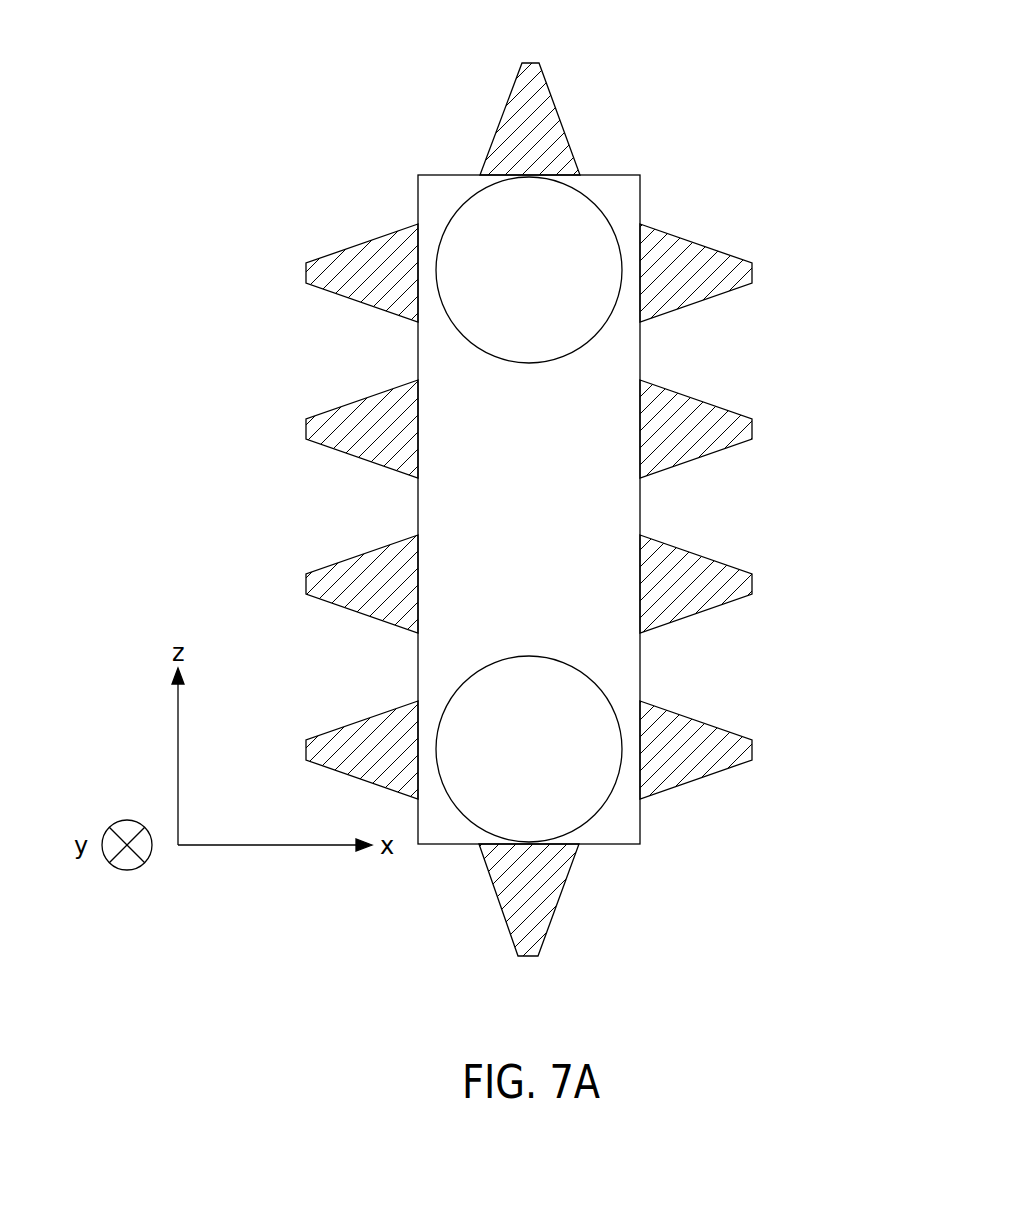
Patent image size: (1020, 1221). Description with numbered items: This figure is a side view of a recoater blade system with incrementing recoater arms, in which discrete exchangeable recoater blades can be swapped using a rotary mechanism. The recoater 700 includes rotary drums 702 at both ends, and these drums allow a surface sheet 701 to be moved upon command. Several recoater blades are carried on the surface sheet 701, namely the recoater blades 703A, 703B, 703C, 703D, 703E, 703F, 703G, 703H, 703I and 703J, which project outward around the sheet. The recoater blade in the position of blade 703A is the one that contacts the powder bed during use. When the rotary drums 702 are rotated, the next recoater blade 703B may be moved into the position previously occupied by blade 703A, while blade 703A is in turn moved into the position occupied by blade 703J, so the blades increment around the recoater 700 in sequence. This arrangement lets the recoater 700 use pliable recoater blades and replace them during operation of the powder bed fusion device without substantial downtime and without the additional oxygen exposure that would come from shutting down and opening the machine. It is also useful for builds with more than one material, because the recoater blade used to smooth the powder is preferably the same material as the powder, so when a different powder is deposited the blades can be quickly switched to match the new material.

The recoater 700 is at (806, 138).
The surface sheet 701 is at (435, 183).
The rotary drums 702 is at (529, 270).
The recoater blade 703A is at (526, 948).
The recoater blade 703B is at (314, 750).
The recoater blade 703C is at (314, 584).
The recoater blade 703D is at (314, 429).
The recoater blade 703E is at (314, 273).
The recoater blade 703F is at (525, 73).
The recoater blade 703G is at (738, 273).
The recoater blade 703H is at (738, 429).
The recoater blade 703I is at (738, 585).
The recoater blade 703J is at (738, 751).